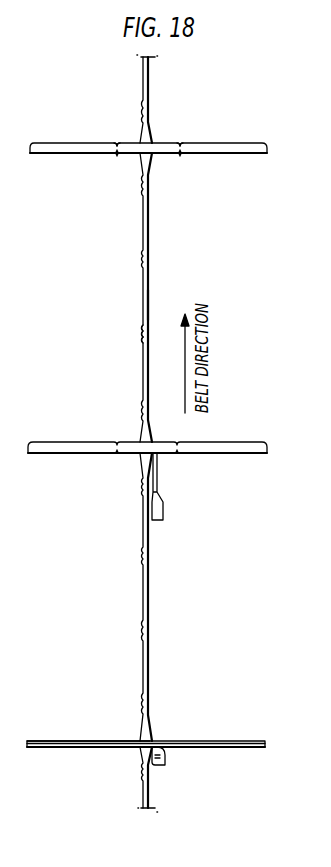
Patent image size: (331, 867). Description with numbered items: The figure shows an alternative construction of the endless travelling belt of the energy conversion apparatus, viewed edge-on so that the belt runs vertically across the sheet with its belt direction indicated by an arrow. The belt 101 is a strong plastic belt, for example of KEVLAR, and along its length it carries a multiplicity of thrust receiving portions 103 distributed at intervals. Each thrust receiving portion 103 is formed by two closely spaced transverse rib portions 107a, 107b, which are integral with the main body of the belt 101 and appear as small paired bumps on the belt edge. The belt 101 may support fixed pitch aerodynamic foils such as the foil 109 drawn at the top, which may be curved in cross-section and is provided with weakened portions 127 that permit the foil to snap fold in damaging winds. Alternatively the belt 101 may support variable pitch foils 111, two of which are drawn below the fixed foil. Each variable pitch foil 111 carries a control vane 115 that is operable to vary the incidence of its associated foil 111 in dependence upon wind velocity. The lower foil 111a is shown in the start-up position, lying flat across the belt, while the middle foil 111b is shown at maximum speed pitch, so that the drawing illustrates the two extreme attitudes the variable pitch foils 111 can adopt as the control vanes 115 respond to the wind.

The belt 101 is at (147, 250).
The thrust receiving portion 103 is at (158, 308).
The transverse rib portion 107a is at (143, 329).
The transverse rib portion 107b is at (143, 342).
The fixed pitch aerodynamic foil 109 is at (205, 142).
The weakened portion 127 is at (115, 157).
The variable pitch foil 111 is at (180, 735).
The foil in start-up position 111a is at (92, 748).
The foil at maximum speed pitch 111b is at (53, 455).
The control vane 115 is at (160, 505).